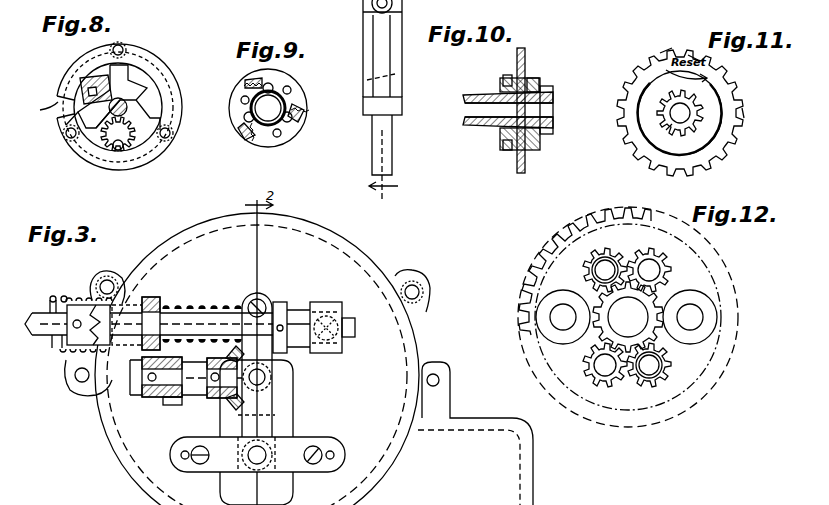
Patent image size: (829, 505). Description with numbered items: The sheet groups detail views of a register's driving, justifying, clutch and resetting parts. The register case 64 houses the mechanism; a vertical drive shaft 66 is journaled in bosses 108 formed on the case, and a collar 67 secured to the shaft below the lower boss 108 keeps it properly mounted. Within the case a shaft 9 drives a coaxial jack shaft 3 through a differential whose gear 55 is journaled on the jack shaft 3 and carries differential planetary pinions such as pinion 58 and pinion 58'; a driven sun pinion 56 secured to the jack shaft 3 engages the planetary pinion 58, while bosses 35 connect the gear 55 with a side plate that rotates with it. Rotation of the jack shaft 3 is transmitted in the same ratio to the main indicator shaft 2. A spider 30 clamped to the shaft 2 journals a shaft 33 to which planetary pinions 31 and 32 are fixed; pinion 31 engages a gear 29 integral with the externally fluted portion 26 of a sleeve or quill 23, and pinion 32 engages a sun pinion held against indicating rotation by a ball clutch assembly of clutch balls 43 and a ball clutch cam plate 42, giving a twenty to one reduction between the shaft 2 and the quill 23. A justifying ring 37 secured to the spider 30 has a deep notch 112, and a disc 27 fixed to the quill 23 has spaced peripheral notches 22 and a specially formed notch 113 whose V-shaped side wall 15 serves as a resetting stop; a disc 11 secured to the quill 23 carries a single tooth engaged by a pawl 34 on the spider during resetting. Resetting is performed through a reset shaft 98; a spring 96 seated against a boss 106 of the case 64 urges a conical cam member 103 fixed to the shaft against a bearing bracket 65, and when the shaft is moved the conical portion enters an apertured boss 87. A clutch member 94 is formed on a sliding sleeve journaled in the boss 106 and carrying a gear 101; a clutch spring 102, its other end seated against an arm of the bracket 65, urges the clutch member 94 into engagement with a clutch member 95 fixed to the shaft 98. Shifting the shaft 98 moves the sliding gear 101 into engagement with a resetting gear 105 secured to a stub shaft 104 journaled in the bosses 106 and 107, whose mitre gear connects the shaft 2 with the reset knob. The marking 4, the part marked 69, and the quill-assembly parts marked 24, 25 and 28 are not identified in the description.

In FIG. 8, the main indicator shaft 2 is at (128, 108).
In FIG. 3, the main indicator shaft 2 is at (266, 378).
In FIG. 12, the jack shaft 3 is at (620, 325).
In FIG. 3, the coupling block 4 is at (330, 318).
In FIG. 3, the shaft 9 is at (262, 461).
In FIG. 10, the disc 11 is at (536, 80).
In FIG. 11, the disc 11 is at (652, 92).
In FIG. 11, the V-shaped side wall 15 is at (742, 100).
In FIG. 11, the spaced notches 22 is at (698, 53).
In FIG. 10, the quill 23 is at (487, 92).
In FIG. 11, the quill 23 is at (670, 118).
In FIG. 11, the tooth 24 is at (666, 54).
In FIG. 10, the ring 25 is at (507, 150).
In FIG. 10, the externally fluted portion 26 is at (538, 120).
In FIG. 10, the disc 27 is at (522, 48).
In FIG. 11, the disc 27 is at (728, 86).
In FIG. 10, the hub 28 is at (527, 78).
In FIG. 10, the gear 29 is at (554, 90).
In FIG. 11, the gear 29 is at (700, 124).
In FIG. 8, the spider 30 is at (121, 74).
In FIG. 8, the planetary pinion 31 is at (96, 138).
In FIG. 3, the planetary pinion 32 is at (367, 48).
In FIG. 8, the shaft 33 is at (120, 150).
In FIG. 8, the pawl 34 is at (93, 78).
In FIG. 12, the bosses 35 is at (545, 318).
In FIG. 8, the justifying ring 37 is at (70, 72).
In FIG. 9, the ball clutch cam plate 42 is at (285, 140).
In FIG. 9, the clutch balls 43 is at (275, 88).
In FIG. 12, the gear 55 is at (535, 262).
In FIG. 12, the driven differential sun pinion 56 is at (660, 302).
In FIG. 12, the differential planetary pinion 58 is at (576, 258).
In FIG. 12, the differential planetary pinion 58' is at (653, 237).
In FIG. 3, the register case 64 is at (330, 246).
In FIG. 3, the bearing bracket 65 is at (313, 440).
In FIG. 3, the vertical drive shaft 66 is at (386, 136).
In FIG. 3, the collar 67 is at (397, 108).
In FIG. 3, the shaft 69 is at (346, 6).
In FIG. 3, the apertured boss 87 is at (342, 343).
In FIG. 3, the clutch member 94 is at (100, 312).
In FIG. 3, the clutch member 95 is at (74, 342).
In FIG. 3, the spring 96 is at (52, 298).
In FIG. 3, the reset shaft 98 is at (46, 318).
In FIG. 3, the sliding gear 101 is at (152, 298).
In FIG. 3, the clutch spring 102 is at (200, 312).
In FIG. 3, the conical cam member 103 is at (282, 302).
In FIG. 3, the stub shaft 104 is at (132, 362).
In FIG. 3, the resetting gear 105 is at (190, 405).
In FIG. 3, the boss 106 is at (134, 306).
In FIG. 3, the boss 107 is at (168, 398).
In FIG. 3, the bosses 108 is at (395, 74).
In FIG. 8, the deep notch 112 is at (40, 110).
In FIG. 11, the notch 113 is at (744, 113).